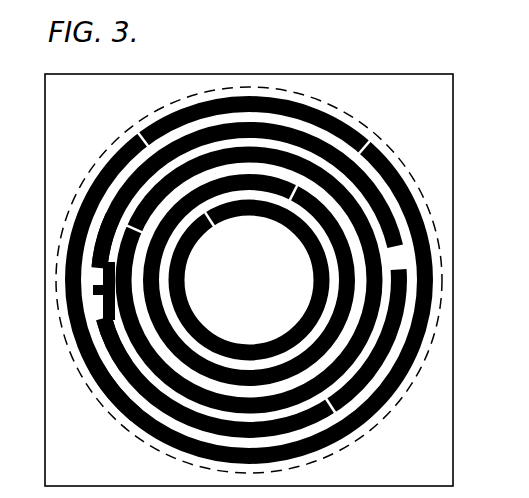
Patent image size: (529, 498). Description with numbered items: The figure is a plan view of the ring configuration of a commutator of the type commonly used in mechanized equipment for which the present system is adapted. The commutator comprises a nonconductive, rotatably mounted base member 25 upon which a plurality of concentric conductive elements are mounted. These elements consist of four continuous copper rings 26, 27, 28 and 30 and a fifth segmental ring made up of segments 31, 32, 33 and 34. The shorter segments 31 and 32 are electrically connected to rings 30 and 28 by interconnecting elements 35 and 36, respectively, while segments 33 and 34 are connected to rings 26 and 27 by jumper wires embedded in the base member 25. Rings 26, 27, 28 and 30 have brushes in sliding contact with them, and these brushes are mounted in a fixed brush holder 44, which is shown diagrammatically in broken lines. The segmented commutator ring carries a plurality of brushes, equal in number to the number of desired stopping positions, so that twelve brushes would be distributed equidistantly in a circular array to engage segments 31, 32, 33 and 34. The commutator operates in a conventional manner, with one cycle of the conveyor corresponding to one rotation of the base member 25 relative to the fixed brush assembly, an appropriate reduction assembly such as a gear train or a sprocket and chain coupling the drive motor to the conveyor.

The base member 25 is at (230, 280).
The continuous copper ring 26 is at (249, 280).
The continuous copper ring 27 is at (249, 280).
The continuous copper ring 28 is at (249, 280).
The continuous copper ring 30 is at (249, 272).
The segment 31 is at (61, 288).
The segment 32 is at (105, 408).
The segment 33 is at (255, 375).
The segment 34 is at (260, 187).
The interconnecting element 35 is at (86, 364).
The interconnecting element 36 is at (82, 218).
The brush holder 44 is at (409, 390).